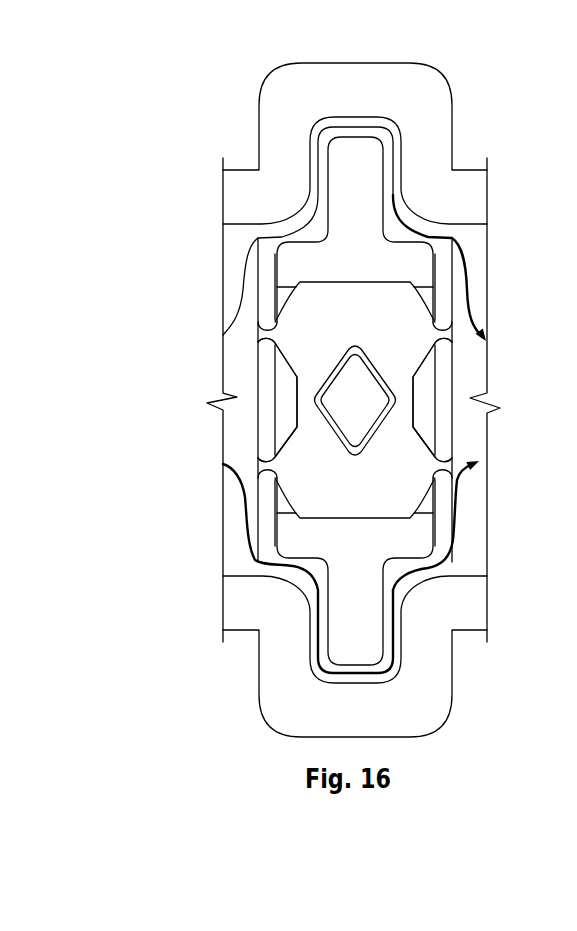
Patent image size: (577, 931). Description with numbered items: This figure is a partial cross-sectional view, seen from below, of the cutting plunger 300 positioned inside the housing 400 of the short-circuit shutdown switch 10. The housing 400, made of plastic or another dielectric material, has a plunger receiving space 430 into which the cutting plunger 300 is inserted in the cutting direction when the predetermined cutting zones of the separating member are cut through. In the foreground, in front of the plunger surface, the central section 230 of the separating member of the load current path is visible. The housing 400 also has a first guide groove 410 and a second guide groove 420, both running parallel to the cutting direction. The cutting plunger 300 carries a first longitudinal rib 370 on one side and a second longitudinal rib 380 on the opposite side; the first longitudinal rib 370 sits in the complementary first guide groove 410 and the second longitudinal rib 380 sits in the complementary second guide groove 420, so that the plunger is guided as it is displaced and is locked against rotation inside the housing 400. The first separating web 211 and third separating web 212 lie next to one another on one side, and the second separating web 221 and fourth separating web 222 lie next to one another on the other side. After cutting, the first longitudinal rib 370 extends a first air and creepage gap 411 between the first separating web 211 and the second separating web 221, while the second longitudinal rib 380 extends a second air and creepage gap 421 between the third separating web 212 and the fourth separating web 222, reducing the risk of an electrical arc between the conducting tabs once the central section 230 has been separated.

The short-circuit shutdown switch 10 is at (179, 95).
The first longitudinal rib 370 is at (362, 168).
The first guide groove 410 is at (397, 178).
The housing 400 is at (465, 212).
The cutting plunger 300 is at (425, 277).
The first air and creepage gap 411 is at (462, 311).
The first separating web 211 is at (258, 337).
The second separating web 221 is at (442, 340).
The central section 230 is at (397, 363).
The third separating web 212 is at (267, 467).
The fourth separating web 222 is at (445, 469).
The plunger receiving space 430 is at (268, 515).
The second air and creepage gap 421 is at (458, 482).
The second longitudinal rib 380 is at (370, 638).
The second guide groove 420 is at (393, 647).